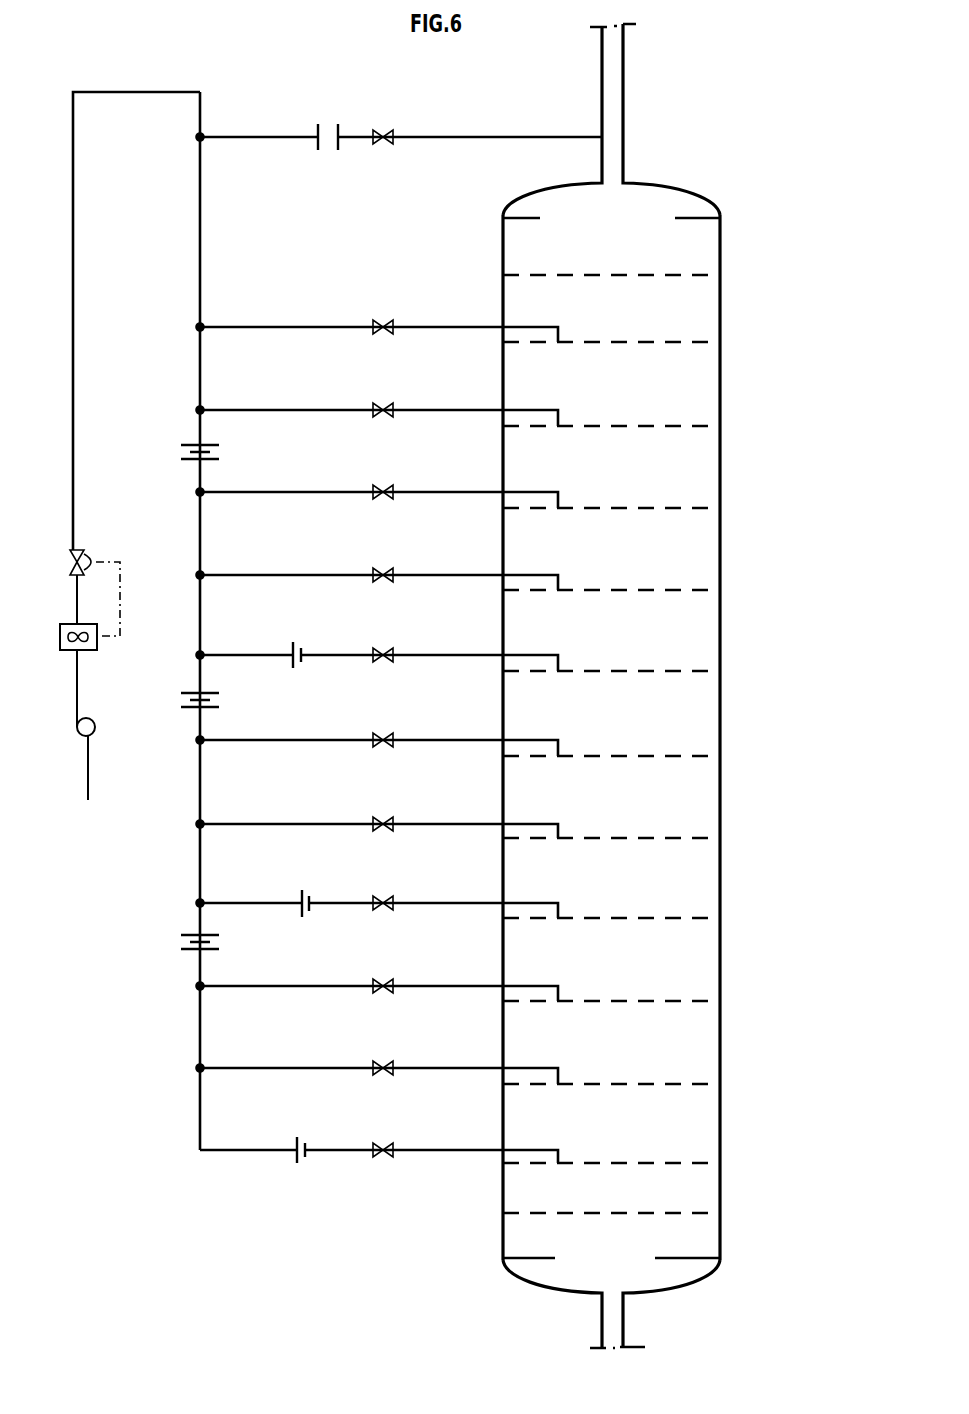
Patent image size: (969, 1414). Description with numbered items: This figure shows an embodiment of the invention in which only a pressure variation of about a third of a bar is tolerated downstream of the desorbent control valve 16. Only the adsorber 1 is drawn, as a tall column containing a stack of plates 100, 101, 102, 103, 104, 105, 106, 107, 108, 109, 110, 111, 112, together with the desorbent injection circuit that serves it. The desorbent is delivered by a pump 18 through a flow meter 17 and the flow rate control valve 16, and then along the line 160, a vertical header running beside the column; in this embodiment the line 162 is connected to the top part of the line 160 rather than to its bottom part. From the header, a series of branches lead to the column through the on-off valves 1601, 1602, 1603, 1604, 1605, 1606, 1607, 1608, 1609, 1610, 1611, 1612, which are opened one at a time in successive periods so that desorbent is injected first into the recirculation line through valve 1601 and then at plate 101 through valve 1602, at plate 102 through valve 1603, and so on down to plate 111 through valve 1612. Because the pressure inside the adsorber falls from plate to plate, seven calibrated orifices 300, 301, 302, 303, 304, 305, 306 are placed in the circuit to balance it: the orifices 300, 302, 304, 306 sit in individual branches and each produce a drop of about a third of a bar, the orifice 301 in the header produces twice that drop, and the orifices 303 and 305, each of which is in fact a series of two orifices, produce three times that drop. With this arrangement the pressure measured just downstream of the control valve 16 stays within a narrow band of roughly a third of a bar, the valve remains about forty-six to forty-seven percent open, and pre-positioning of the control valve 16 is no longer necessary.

The adsorber 1 is at (733, 163).
The flow rate control valve 16 is at (82, 553).
The flow meter 17 is at (97, 646).
The pump 18 is at (79, 733).
The plate 100 is at (690, 275).
The plate 101 is at (690, 342).
The plate 102 is at (690, 426).
The plate 103 is at (690, 508).
The plate 104 is at (690, 590).
The plate 105 is at (690, 671).
The plate 106 is at (690, 756).
The plate 107 is at (690, 838).
The plate 108 is at (690, 918).
The plate 109 is at (690, 1001).
The plate 110 is at (690, 1084).
The plate 111 is at (690, 1163).
The plate 112 is at (690, 1213).
The line 160 is at (200, 253).
The line 162 is at (73, 188).
The calibrated orifice 300 is at (318, 125).
The calibrated orifice 301 is at (212, 445).
The calibrated orifice 302 is at (293, 643).
The calibrated orifice 303 is at (212, 693).
The calibrated orifice 304 is at (302, 890).
The calibrated orifice 305 is at (212, 935).
The calibrated orifice 306 is at (297, 1138).
The on-off valve 1601 is at (383, 130).
The on-off valve 1602 is at (383, 320).
The on-off valve 1603 is at (383, 403).
The on-off valve 1604 is at (383, 485).
The on-off valve 1605 is at (383, 568).
The on-off valve 1606 is at (383, 648).
The on-off valve 1607 is at (383, 733).
The on-off valve 1608 is at (383, 817).
The on-off valve 1609 is at (383, 896).
The on-off valve 1610 is at (383, 979).
The on-off valve 1611 is at (383, 1061).
The on-off valve 1612 is at (383, 1143).